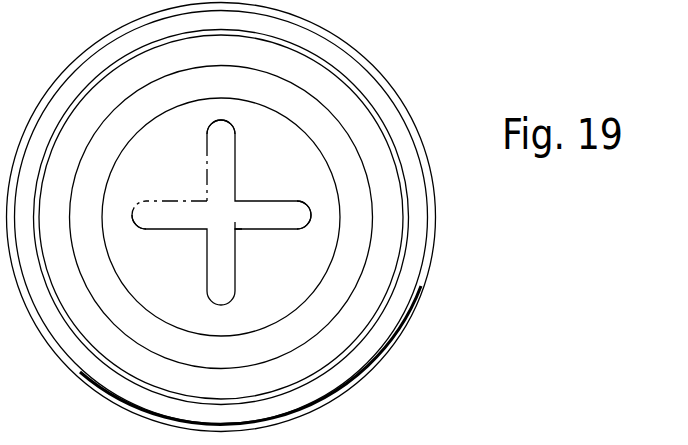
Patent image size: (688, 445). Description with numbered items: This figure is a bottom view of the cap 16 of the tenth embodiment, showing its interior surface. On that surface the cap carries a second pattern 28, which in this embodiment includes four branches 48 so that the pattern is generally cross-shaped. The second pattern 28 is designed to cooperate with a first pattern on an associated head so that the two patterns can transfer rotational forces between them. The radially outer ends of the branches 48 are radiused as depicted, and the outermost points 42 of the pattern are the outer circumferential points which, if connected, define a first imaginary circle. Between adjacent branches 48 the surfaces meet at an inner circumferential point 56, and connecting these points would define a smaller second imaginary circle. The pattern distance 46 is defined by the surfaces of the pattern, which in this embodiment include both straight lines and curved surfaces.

The cap 16 is at (410, 87).
The second pattern 28 is at (237, 282).
The outermost points 42 is at (223, 125).
The pattern distance 46 is at (174, 202).
The branches 48 is at (281, 214).
The inner circumferential point 56 is at (237, 230).